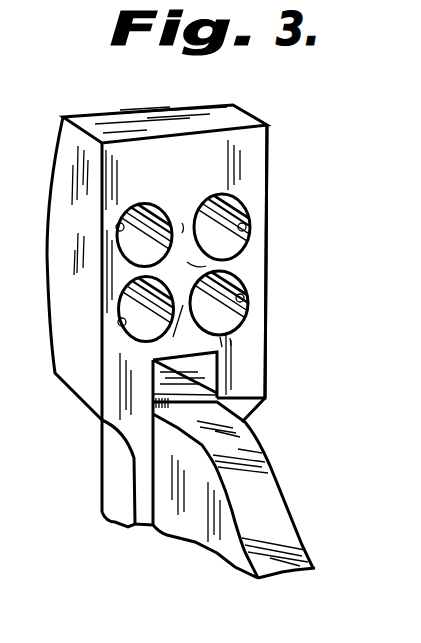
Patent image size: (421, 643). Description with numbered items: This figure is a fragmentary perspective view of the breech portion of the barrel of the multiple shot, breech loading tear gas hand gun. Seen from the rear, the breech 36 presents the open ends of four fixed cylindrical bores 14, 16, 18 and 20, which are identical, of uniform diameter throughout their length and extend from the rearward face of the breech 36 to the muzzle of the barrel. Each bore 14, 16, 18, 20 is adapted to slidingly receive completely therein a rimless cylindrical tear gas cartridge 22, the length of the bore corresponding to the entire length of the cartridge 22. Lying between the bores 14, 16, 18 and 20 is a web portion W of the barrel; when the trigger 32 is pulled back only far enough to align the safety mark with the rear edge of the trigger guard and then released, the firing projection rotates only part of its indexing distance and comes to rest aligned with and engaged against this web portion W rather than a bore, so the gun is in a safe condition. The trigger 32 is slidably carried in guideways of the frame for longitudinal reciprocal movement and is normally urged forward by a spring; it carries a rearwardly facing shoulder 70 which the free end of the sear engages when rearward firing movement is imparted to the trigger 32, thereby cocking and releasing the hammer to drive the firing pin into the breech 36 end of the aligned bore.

The cylindrical bore 14 is at (245, 231).
The cylindrical bore 16 is at (244, 299).
The cylindrical bore 18 is at (119, 324).
The cylindrical bore 20 is at (117, 227).
The tear gas cartridge 22 is at (148, 205).
The trigger 32 is at (205, 542).
The breech 36 is at (257, 197).
The rearwardly facing shoulder 70 is at (262, 400).
The web portion W is at (78, 287).